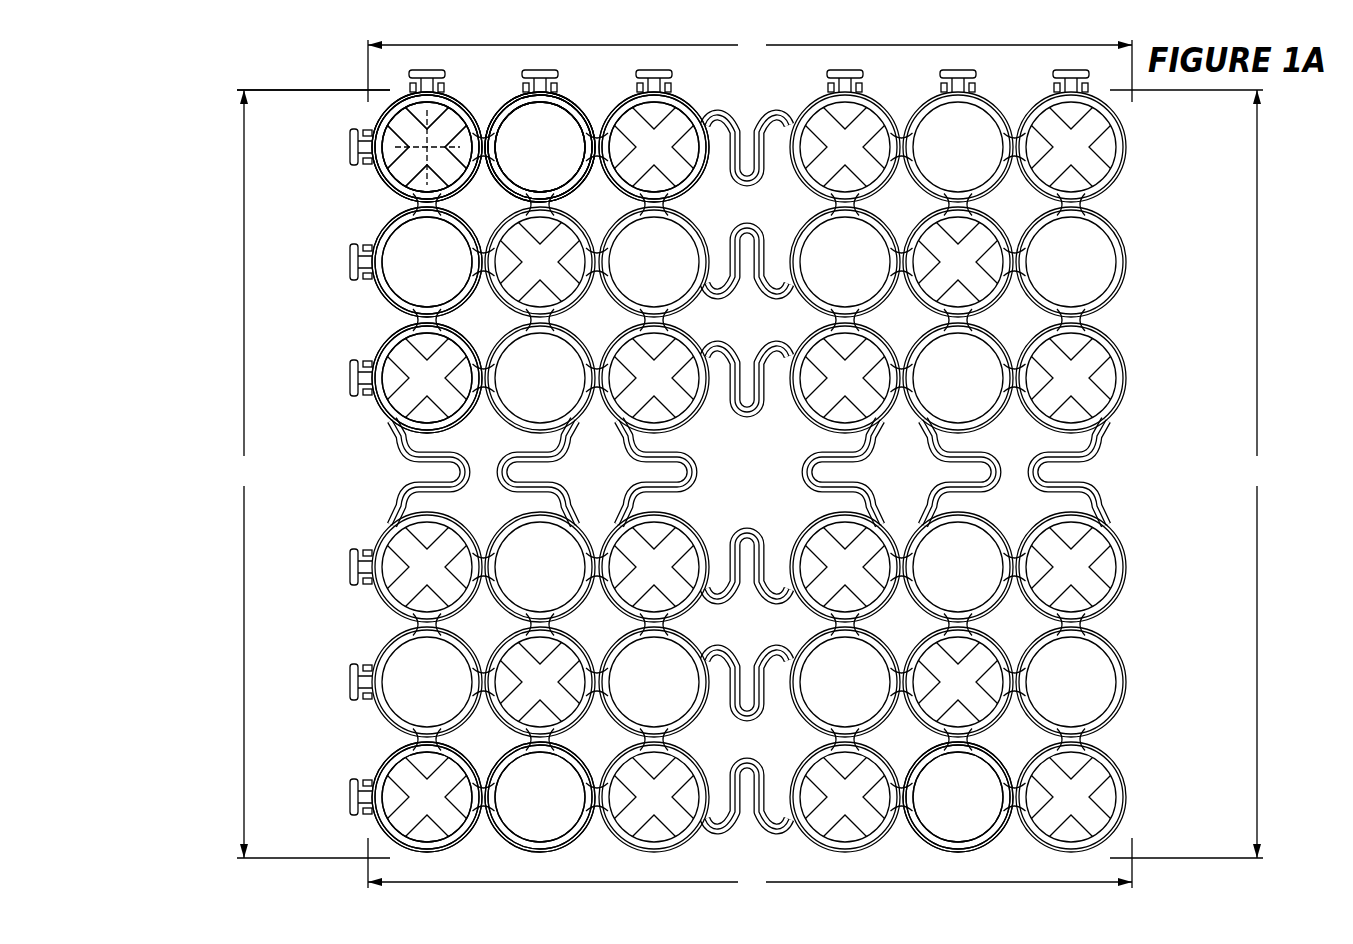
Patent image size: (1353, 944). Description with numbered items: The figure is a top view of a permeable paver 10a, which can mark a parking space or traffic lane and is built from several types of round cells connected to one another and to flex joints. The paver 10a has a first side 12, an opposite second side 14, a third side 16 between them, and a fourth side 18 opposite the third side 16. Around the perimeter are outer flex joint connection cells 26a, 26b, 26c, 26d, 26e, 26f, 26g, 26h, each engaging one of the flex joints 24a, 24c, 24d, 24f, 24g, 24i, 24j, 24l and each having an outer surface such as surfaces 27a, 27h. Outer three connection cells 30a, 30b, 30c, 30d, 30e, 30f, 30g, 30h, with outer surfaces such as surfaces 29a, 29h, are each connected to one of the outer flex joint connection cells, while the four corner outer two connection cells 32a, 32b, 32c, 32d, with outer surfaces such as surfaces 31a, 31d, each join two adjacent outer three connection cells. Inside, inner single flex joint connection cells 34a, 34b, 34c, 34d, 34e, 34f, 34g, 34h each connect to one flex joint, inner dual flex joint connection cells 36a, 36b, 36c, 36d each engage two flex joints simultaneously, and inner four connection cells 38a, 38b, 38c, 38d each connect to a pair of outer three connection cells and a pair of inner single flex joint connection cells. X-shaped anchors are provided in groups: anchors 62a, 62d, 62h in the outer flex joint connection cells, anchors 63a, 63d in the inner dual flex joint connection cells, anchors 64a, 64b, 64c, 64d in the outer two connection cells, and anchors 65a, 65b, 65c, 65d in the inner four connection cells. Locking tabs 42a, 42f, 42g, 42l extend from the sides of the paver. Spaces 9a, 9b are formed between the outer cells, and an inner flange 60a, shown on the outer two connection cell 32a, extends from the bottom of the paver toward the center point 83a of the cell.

The paver 10a is at (224, 91).
The first side 12 is at (244, 474).
The second side 14 is at (1257, 474).
The third side 16 is at (750, 45).
The fourth side 18 is at (750, 882).
The flex joint 24a is at (762, 415).
The flex joint 24c is at (758, 185).
The flex joint 24d is at (810, 490).
The flex joint 24f is at (1035, 472).
The flex joint 24g is at (747, 540).
The flex joint 24i is at (765, 770).
The flex joint 24j is at (688, 466).
The flex joint 24l is at (466, 472).
The outer flex joint connection cell 26a is at (677, 97).
The outer flex joint connection cell 26b is at (820, 97).
The outer flex joint connection cell 26c is at (1115, 425).
The outer flex joint connection cell 26d is at (1115, 535).
The outer flex joint connection cell 26e is at (818, 848).
The outer flex joint connection cell 26f is at (686, 848).
The outer flex joint connection cell 26g is at (385, 535).
The outer flex joint connection cell 26h is at (383, 415).
The outer flex joint connection cell outer surface 27a is at (627, 96).
The outer flex joint connection cell outer surface 27h is at (380, 355).
The outer three connection cell outer surface 29a is at (506, 94).
The outer three connection cell outer surface 29h is at (380, 238).
The outer three connection cell 30a is at (572, 97).
The outer three connection cell 30b is at (935, 97).
The outer three connection cell 30c is at (1115, 300).
The outer three connection cell 30d is at (1115, 650).
The outer three connection cell 30e is at (932, 848).
The outer three connection cell 30f is at (568, 848).
The outer three connection cell 30g is at (385, 650).
The outer three connection cell 30h is at (385, 298).
The outer two connection cell outer surface 31a is at (378, 184).
The outer two connection cell outer surface 31d is at (378, 770).
The outer two connection cell 32a is at (440, 97).
The outer two connection cell 32b is at (1050, 97).
The outer two connection cell 32c is at (1115, 762).
The outer two connection cell 32d is at (453, 848).
The inner single flex joint connection cell 34a is at (703, 217).
The inner single flex joint connection cell 34b is at (887, 220).
The inner single flex joint connection cell 34c is at (1012, 450).
The inner single flex joint connection cell 34d is at (1015, 538).
The inner single flex joint connection cell 34e is at (887, 765).
The inner single flex joint connection cell 34f is at (583, 765).
The inner single flex joint connection cell 34g is at (482, 538).
The inner single flex joint connection cell 34h is at (478, 452).
The inner dual flex joint connection cell 36a is at (618, 342).
The inner dual flex joint connection cell 36b is at (888, 335).
The inner dual flex joint connection cell 36c is at (888, 615).
The inner dual flex joint connection cell 36d is at (618, 615).
The inner four connection cell 38a is at (505, 308).
The inner four connection cell 38b is at (997, 218).
The inner four connection cell 38c is at (997, 762).
The inner four connection cell 38d is at (505, 760).
The locking tab 42a is at (420, 70).
The locking tab 42f is at (1073, 70).
The locking tab 42g is at (345, 145).
The locking tab 42l is at (345, 800).
The inner flange 60a is at (380, 120).
The X-shaped anchor 62a is at (700, 172).
The X-shaped anchor 62d is at (690, 768).
The X-shaped anchor 62h is at (410, 378).
The X-shaped anchor 63a is at (687, 340).
The X-shaped anchor 63d is at (632, 540).
The X-shaped anchor 64a is at (415, 153).
The X-shaped anchor 64b is at (1105, 180).
The X-shaped anchor 64c is at (1045, 826).
The X-shaped anchor 64d is at (415, 812).
The X-shaped anchor 65a is at (572, 228).
The X-shaped anchor 65b is at (993, 305).
The X-shaped anchor 65c is at (985, 655).
The X-shaped anchor 65d is at (525, 660).
The center point 83a is at (437, 160).
The space 9a is at (498, 190).
The space 9b is at (587, 190).